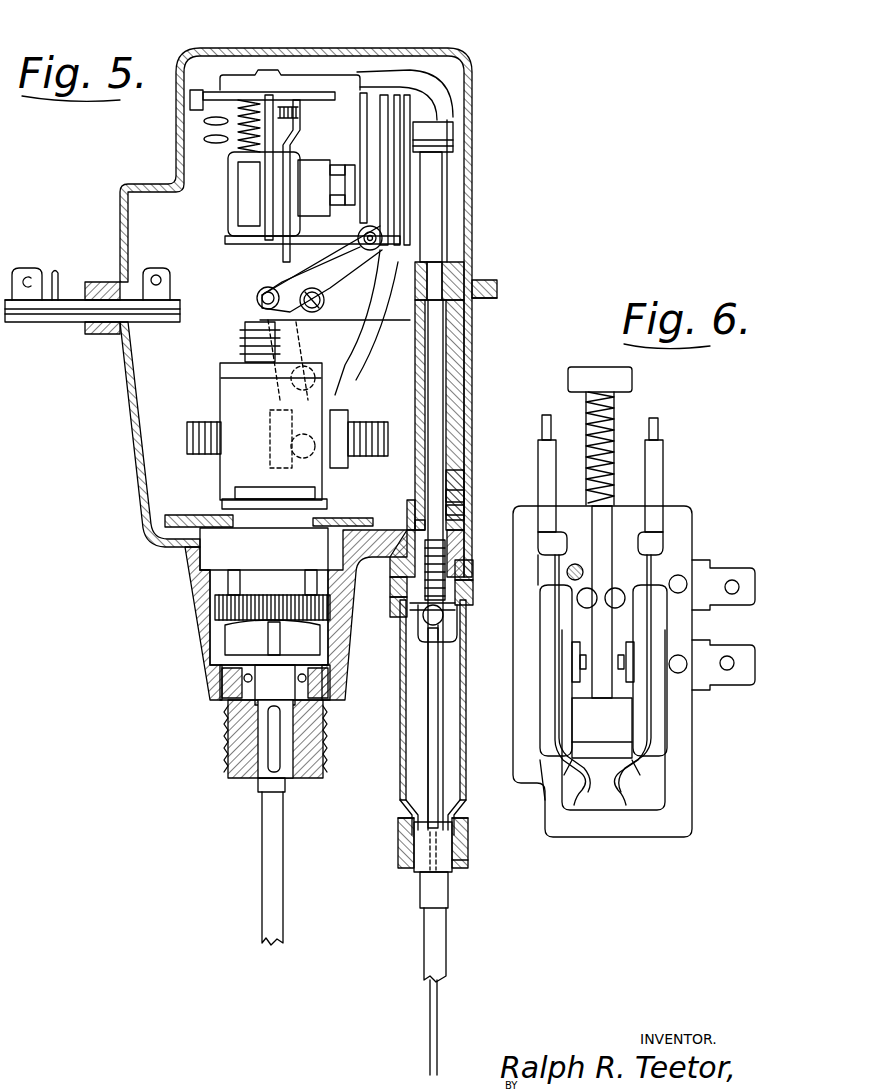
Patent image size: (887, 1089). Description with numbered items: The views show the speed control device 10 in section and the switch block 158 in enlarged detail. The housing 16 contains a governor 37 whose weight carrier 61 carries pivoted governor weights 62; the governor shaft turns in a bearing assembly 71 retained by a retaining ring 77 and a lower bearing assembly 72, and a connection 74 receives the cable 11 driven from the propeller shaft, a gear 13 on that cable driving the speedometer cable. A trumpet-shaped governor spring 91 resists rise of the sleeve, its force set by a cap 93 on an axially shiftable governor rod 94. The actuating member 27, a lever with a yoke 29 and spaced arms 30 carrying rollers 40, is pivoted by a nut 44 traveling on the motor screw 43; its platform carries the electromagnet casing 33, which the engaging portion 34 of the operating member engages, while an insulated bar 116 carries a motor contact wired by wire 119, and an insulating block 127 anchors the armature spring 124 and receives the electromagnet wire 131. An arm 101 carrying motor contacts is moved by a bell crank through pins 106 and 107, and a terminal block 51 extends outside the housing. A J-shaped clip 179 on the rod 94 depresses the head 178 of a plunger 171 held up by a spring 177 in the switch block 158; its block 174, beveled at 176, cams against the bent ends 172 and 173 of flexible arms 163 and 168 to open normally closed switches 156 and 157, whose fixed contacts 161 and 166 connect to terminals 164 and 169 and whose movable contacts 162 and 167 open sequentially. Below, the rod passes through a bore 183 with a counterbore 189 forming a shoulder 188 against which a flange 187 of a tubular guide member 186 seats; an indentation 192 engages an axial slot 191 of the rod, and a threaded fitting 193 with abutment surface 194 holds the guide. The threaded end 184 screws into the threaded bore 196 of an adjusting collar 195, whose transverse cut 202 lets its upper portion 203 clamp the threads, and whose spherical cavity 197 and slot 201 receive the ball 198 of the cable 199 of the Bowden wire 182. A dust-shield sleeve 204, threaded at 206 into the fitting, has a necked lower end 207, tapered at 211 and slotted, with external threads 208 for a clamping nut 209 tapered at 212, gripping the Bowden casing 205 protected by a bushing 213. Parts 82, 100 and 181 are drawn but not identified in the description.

In FIG. 5, the device 10 is at (518, 127).
In FIG. 5, the cable 11 is at (264, 857).
In FIG. 5, the gear 13 is at (212, 608).
In FIG. 5, the housing 16 is at (473, 188).
In FIG. 5, the actuating member 27 is at (264, 271).
In FIG. 5, the yoke 29 is at (347, 368).
In FIG. 5, the arms 30 is at (336, 389).
In FIG. 5, the casing 33 is at (349, 167).
In FIG. 5, the engaging portion 34 is at (420, 252).
In FIG. 5, the governor 37 is at (196, 405).
In FIG. 5, the rollers 40 is at (291, 394).
In FIG. 5, the screw 43 is at (385, 428).
In FIG. 5, the nut 44 is at (402, 394).
In FIG. 5, the terminal block 51 is at (182, 312).
In FIG. 5, the governor weight carrier 61 is at (222, 499).
In FIG. 5, the governor weights 62 is at (228, 396).
In FIG. 5, the bearing assembly 71 is at (288, 556).
In FIG. 5, the bearing assembly 72 is at (225, 683).
In FIG. 5, the connection 74 is at (262, 738).
In FIG. 5, the retaining ring 77 is at (267, 512).
In FIG. 5, the spacer 82 is at (270, 526).
In FIG. 5, the governor spring 91 is at (200, 142).
In FIG. 5, the cap 93 is at (188, 104).
In FIG. 5, the governor rod 94 is at (436, 224).
In FIG. 5, the lever 100 is at (348, 275).
In FIG. 5, the arm 101 is at (366, 184).
In FIG. 5, the pin 106 is at (258, 316).
In FIG. 5, the pin 107 is at (372, 250).
In FIG. 5, the bar 116 is at (296, 145).
In FIG. 6, the wire 119 is at (542, 427).
In FIG. 5, the spring 124 is at (240, 156).
In FIG. 5, the insulating block 127 is at (246, 242).
In FIG. 6, the wire 131 is at (666, 427).
In FIG. 6, the switch 156 is at (662, 701).
In FIG. 6, the switch 157 is at (553, 691).
In FIG. 6, the switch block 158 is at (662, 840).
In FIG. 6, the fixed contact 161 is at (638, 658).
In FIG. 6, the movable contact 162 is at (640, 668).
In FIG. 6, the flexible arm 163 is at (652, 723).
In FIG. 6, the terminal 164 is at (730, 688).
In FIG. 6, the fixed contact 166 is at (556, 711).
In FIG. 6, the movable contact 167 is at (564, 671).
In FIG. 6, the flexible arm 168 is at (555, 731).
In FIG. 6, the terminal 169 is at (733, 572).
In FIG. 6, the plunger 171 is at (603, 564).
In FIG. 6, the bent end 172 is at (648, 763).
In FIG. 6, the bent end 173 is at (566, 778).
In FIG. 6, the block 174 is at (612, 724).
In FIG. 6, the chamfer 176 is at (575, 749).
In FIG. 6, the spring 177 is at (616, 480).
In FIG. 6, the head 178 is at (620, 381).
In FIG. 5, the clip 179 is at (455, 144).
In FIG. 5, the clamp block 181 is at (455, 134).
In FIG. 5, the Bowden wire 182 is at (421, 946).
In FIG. 5, the bore 183 is at (460, 474).
In FIG. 5, the threaded end 184 is at (458, 532).
In FIG. 5, the guide member 186 is at (452, 383).
In FIG. 5, the flange 187 is at (452, 512).
In FIG. 5, the shoulder 188 is at (452, 499).
In FIG. 5, the counterbore 189 is at (412, 504).
In FIG. 5, the slot 191 is at (466, 342).
In FIG. 5, the indentation 192 is at (482, 280).
In FIG. 5, the fitting 193 is at (460, 550).
In FIG. 5, the abutment surface 194 is at (398, 580).
In FIG. 5, the adjusting collar 195 is at (424, 614).
In FIG. 5, the threaded bore 196 is at (444, 618).
In FIG. 5, the spherical cavity 197 is at (418, 632).
In FIG. 5, the ball 198 is at (450, 639).
In FIG. 5, the cable 199 is at (428, 720).
In FIG. 5, the slot 201 is at (445, 654).
In FIG. 5, the transverse slot 202 is at (473, 594).
In FIG. 5, the upper end portion 203 is at (473, 570).
In FIG. 5, the sleeve member 204 is at (400, 763).
In FIG. 5, the casing 205 is at (440, 943).
In FIG. 5, the threaded upper end 206 is at (404, 596).
In FIG. 5, the lower end 207 is at (470, 842).
In FIG. 5, the external threads 208 is at (398, 844).
In FIG. 5, the clamping nut 209 is at (398, 822).
In FIG. 5, the taper 211 is at (414, 870).
In FIG. 5, the taper 212 is at (468, 862).
In FIG. 5, the bushing 213 is at (425, 892).